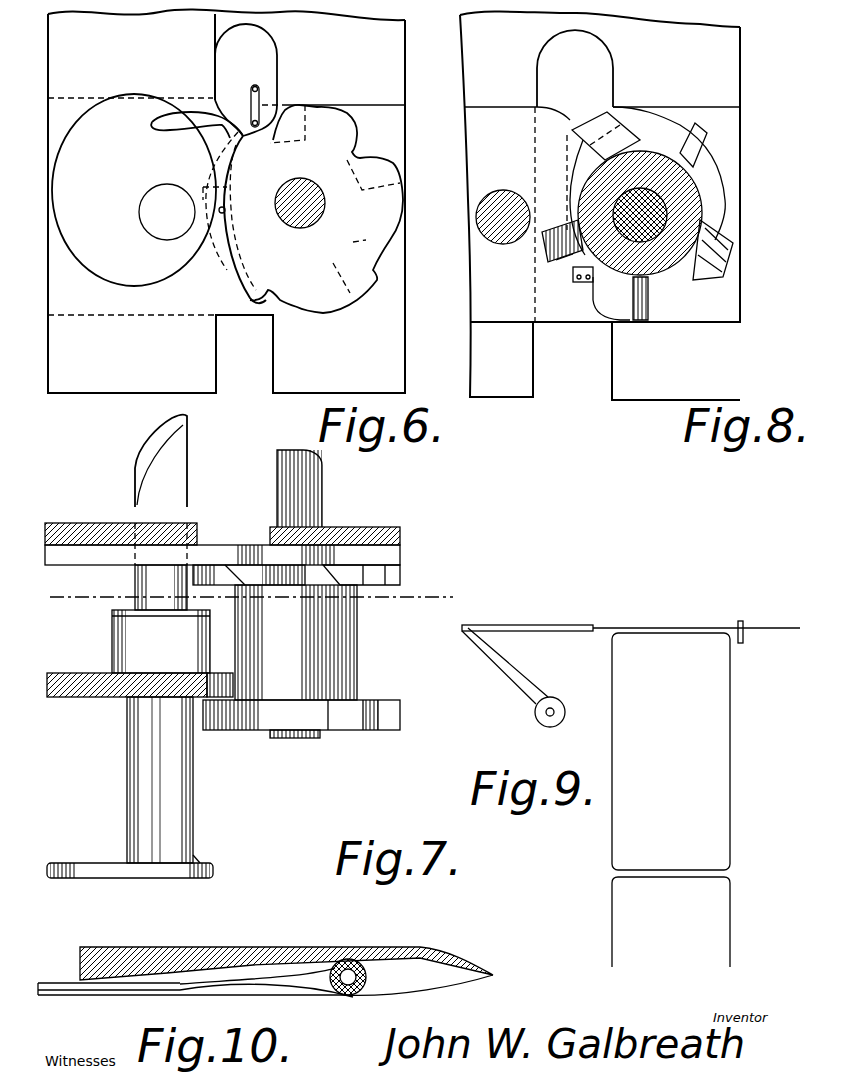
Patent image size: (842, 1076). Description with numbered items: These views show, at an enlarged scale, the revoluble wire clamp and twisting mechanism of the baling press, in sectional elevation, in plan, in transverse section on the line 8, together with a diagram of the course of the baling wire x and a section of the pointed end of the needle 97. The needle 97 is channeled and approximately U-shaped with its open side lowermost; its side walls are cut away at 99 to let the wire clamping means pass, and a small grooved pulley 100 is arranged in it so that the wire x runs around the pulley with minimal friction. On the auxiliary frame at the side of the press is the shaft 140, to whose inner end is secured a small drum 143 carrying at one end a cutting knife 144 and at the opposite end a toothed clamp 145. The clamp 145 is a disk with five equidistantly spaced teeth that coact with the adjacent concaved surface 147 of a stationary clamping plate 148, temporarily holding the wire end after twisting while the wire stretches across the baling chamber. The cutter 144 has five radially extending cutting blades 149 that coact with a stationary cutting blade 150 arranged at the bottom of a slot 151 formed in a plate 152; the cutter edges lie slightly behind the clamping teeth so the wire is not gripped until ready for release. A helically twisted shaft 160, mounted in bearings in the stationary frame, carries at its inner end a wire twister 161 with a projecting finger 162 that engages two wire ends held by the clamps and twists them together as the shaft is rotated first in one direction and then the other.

In FIG. 7, the section line 8 is at (253, 599).
In FIG. 6, the baling wire x is at (260, 90).
In FIG. 9, the baling wire x is at (674, 628).
In FIG. 9, the needle 97 is at (533, 626).
In FIG. 10, the needle 97 is at (225, 947).
In FIG. 10, the cut-away portion of needle side wall 99 is at (293, 980).
In FIG. 10, the grooved pulley 100 is at (345, 960).
In FIG. 6, the shaft 140 is at (298, 232).
In FIG. 8, the shaft 140 is at (667, 207).
In FIG. 7, the shaft 140 is at (322, 507).
In FIG. 9, the shaft 140 is at (790, 630).
In FIG. 8, the drum 143 is at (727, 258).
In FIG. 7, the drum 143 is at (320, 641).
In FIG. 6, the cutting knife 144 is at (355, 130).
In FIG. 8, the cutting knife 144 is at (694, 296).
In FIG. 7, the cutting knife 144 is at (218, 573).
In FIG. 6, the toothed clamp 145 is at (238, 172).
In FIG. 6, the concaved surface 147 is at (225, 168).
In FIG. 8, the concaved surface 147 is at (583, 160).
In FIG. 7, the concaved surface 147 is at (208, 686).
In FIG. 6, the stationary clamping plate 148 is at (137, 347).
In FIG. 7, the stationary clamping plate 148 is at (77, 673).
In FIG. 8, the cutting blades 149 is at (620, 118).
In FIG. 8, the stationary cutting blade 150 is at (573, 278).
In FIG. 8, the slot 151 is at (573, 250).
In FIG. 8, the plate 152 is at (535, 300).
In FIG. 6, the helically twisted shaft 160 is at (147, 218).
In FIG. 8, the helically twisted shaft 160 is at (490, 193).
In FIG. 7, the helically twisted shaft 160 is at (170, 432).
In FIG. 6, the wire twister 161 is at (77, 263).
In FIG. 7, the wire twister 161 is at (140, 887).
In FIG. 6, the projecting finger 162 is at (188, 110).
In FIG. 7, the projecting finger 162 is at (200, 863).